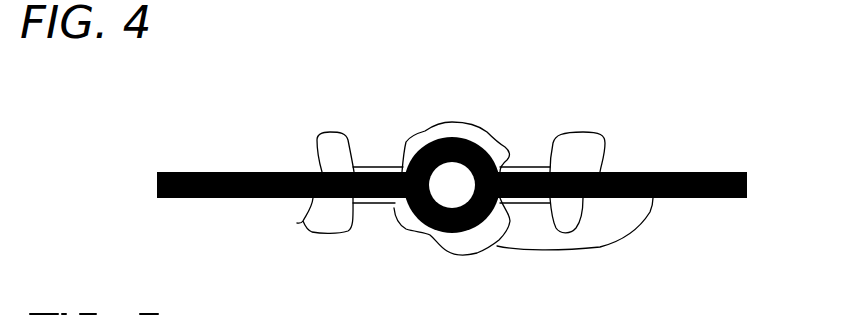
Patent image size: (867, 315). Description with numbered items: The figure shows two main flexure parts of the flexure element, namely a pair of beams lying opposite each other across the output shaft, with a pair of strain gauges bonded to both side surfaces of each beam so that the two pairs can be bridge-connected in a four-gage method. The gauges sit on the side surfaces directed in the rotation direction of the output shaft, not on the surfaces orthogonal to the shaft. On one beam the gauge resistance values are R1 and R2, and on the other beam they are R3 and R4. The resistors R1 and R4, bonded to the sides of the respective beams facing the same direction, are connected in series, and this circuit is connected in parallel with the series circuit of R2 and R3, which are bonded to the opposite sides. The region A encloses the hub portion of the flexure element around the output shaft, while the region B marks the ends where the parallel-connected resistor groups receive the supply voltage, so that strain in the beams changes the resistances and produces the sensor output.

The first cross-sectional region A is at (665, 172).
The both ends B is at (297, 223).
The strain gauge resistance R1 is at (357, 147).
The strain gauge resistance R2 is at (343, 222).
The strain gauge resistance R3 is at (549, 219).
The strain gauge resistance R4 is at (560, 149).